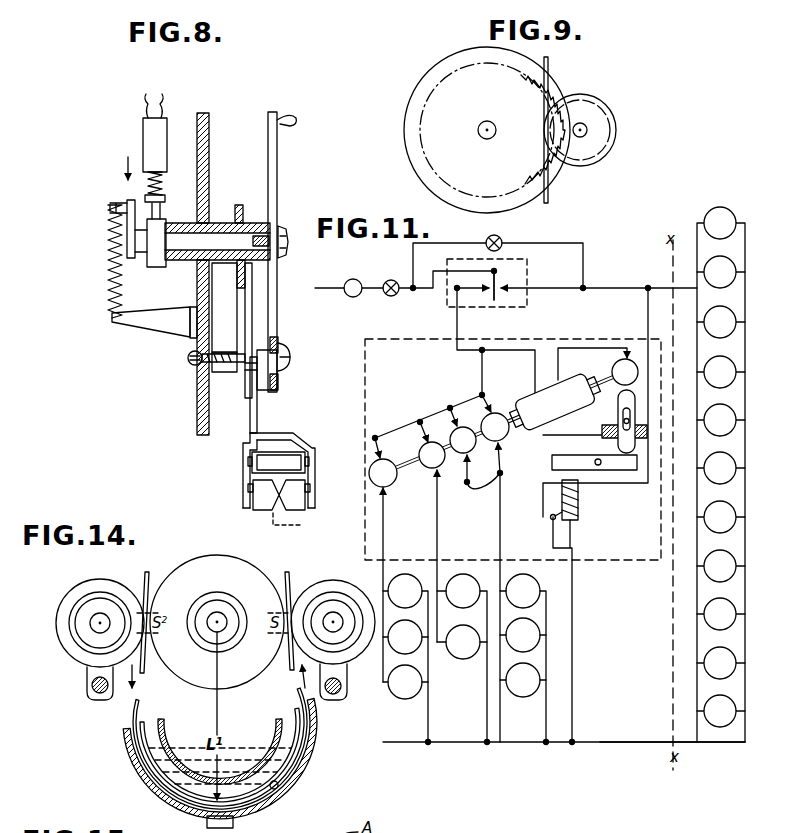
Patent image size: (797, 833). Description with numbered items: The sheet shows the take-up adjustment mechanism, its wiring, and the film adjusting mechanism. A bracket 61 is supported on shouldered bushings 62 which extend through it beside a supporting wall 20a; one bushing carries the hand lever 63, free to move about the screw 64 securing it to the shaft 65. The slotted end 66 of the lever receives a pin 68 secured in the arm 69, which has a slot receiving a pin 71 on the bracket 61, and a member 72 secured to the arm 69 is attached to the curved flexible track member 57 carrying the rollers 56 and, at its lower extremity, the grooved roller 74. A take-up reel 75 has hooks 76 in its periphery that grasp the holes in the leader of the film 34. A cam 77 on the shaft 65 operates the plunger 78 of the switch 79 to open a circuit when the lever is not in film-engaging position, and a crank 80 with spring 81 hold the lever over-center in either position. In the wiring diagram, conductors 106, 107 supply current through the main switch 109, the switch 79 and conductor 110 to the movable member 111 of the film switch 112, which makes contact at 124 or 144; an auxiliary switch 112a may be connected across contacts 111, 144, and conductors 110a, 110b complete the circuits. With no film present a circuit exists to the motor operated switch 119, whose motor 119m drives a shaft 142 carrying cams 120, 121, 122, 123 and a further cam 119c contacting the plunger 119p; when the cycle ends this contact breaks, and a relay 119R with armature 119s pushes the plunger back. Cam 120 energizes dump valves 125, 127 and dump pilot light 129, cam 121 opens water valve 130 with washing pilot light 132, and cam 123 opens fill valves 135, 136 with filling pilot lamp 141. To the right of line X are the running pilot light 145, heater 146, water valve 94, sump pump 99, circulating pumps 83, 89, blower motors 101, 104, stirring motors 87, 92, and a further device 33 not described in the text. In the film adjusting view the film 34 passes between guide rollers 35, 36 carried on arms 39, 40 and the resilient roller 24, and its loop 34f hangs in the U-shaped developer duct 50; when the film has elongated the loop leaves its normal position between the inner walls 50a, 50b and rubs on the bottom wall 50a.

In FIG. 8, the frame plate 20a is at (210, 160).
In FIG. 8, the hand lever 63 is at (278, 156).
In FIG. 8, the shaft 65 is at (256, 236).
In FIG. 8, the screw 64 is at (284, 252).
In FIG. 8, the shouldered bushings 62 is at (238, 205).
In FIG. 8, the cam 77 is at (155, 268).
In FIG. 8, the plunger 78 is at (145, 198).
In FIG. 8, the switch 79 is at (143, 150).
In FIG. 11, the switch 79 is at (399, 279).
In FIG. 8, the crank 80 is at (131, 258).
In FIG. 8, the spring 81 is at (108, 272).
In FIG. 8, the bracket 61 is at (244, 333).
In FIG. 8, the pin 68 is at (284, 362).
In FIG. 8, the end of lever 66 is at (280, 386).
In FIG. 8, the arm 69 is at (265, 394).
In FIG. 8, the pin 71 is at (264, 405).
In FIG. 8, the member 72 is at (257, 420).
In FIG. 8, the track member 57 is at (308, 458).
In FIG. 8, the rollers 56 is at (278, 462).
In FIG. 8, the grooved roller 74 is at (293, 509).
In FIG. 9, the grooved roller 74 is at (598, 138).
In FIG. 9, the take-up reel 75 is at (402, 176).
In FIG. 9, the hooks 76 is at (522, 80).
In FIG. 9, the film 34 is at (549, 74).
In FIG. 14, the film 34 is at (146, 580).
In FIG. 11, the conductor 106 is at (329, 278).
In FIG. 11, the main switch 109 is at (361, 296).
In FIG. 11, the auxiliary switch 112a is at (510, 236).
In FIG. 11, the film switch 112 is at (527, 268).
In FIG. 11, the conductor 110 is at (455, 278).
In FIG. 11, the movable member 111 is at (510, 280).
In FIG. 11, the contact 124 is at (472, 297).
In FIG. 11, the contact 144 is at (540, 298).
In FIG. 11, the conductor 110a is at (639, 279).
In FIG. 11, the motor operated switch 119 is at (365, 385).
In FIG. 11, the shaft 142 is at (410, 470).
In FIG. 11, the cam 123 is at (391, 562).
In FIG. 11, the cam 121 is at (436, 532).
In FIG. 11, the cam 122 is at (475, 449).
In FIG. 11, the cam 120 is at (500, 569).
In FIG. 11, the motor 119m is at (554, 401).
In FIG. 11, the cam 119c is at (598, 366).
In FIG. 11, the plunger 119p is at (614, 404).
In FIG. 11, the armature 119s is at (595, 404).
In FIG. 11, the relay 119R is at (579, 510).
In FIG. 11, the fill valve 135 is at (405, 658).
In FIG. 11, the fill valve 136 is at (405, 637).
In FIG. 11, the filling pilot lamp 141 is at (405, 682).
In FIG. 11, the water valve 130 is at (462, 658).
In FIG. 11, the washing pilot light 132 is at (462, 642).
In FIG. 11, the dump valve 125 is at (523, 658).
In FIG. 11, the dump valve 127 is at (523, 635).
In FIG. 11, the dump pilot light 129 is at (523, 680).
In FIG. 11, the conductor 107 is at (564, 733).
In FIG. 11, the conductor 110b is at (672, 731).
In FIG. 11, the circulating pump 83 is at (720, 223).
In FIG. 11, the circulating pump 89 is at (721, 272).
In FIG. 11, the running pilot light 145 is at (721, 322).
In FIG. 11, the electric heater 146 is at (721, 372).
In FIG. 11, the water valve 94 is at (721, 420).
In FIG. 11, the sump pump 99 is at (721, 468).
In FIG. 11, the solenoid 33 is at (721, 517).
In FIG. 11, the blower 101 is at (721, 566).
In FIG. 11, the air circulating device 104 is at (721, 614).
In FIG. 11, the stirring motor 87 is at (721, 663).
In FIG. 11, the stirring motor 92 is at (721, 711).
In FIG. 14, the roller 35 is at (64, 600).
In FIG. 14, the arm 39 is at (87, 688).
In FIG. 14, the roller 24 is at (186, 568).
In FIG. 14, the guide roller 36 is at (337, 582).
In FIG. 14, the arm 40 is at (345, 695).
In FIG. 14, the duct 50 is at (262, 812).
In FIG. 14, the loop 34f is at (192, 795).
In FIG. 14, the inner wall 50a is at (283, 786).
In FIG. 14, the inner wall 50b is at (270, 775).